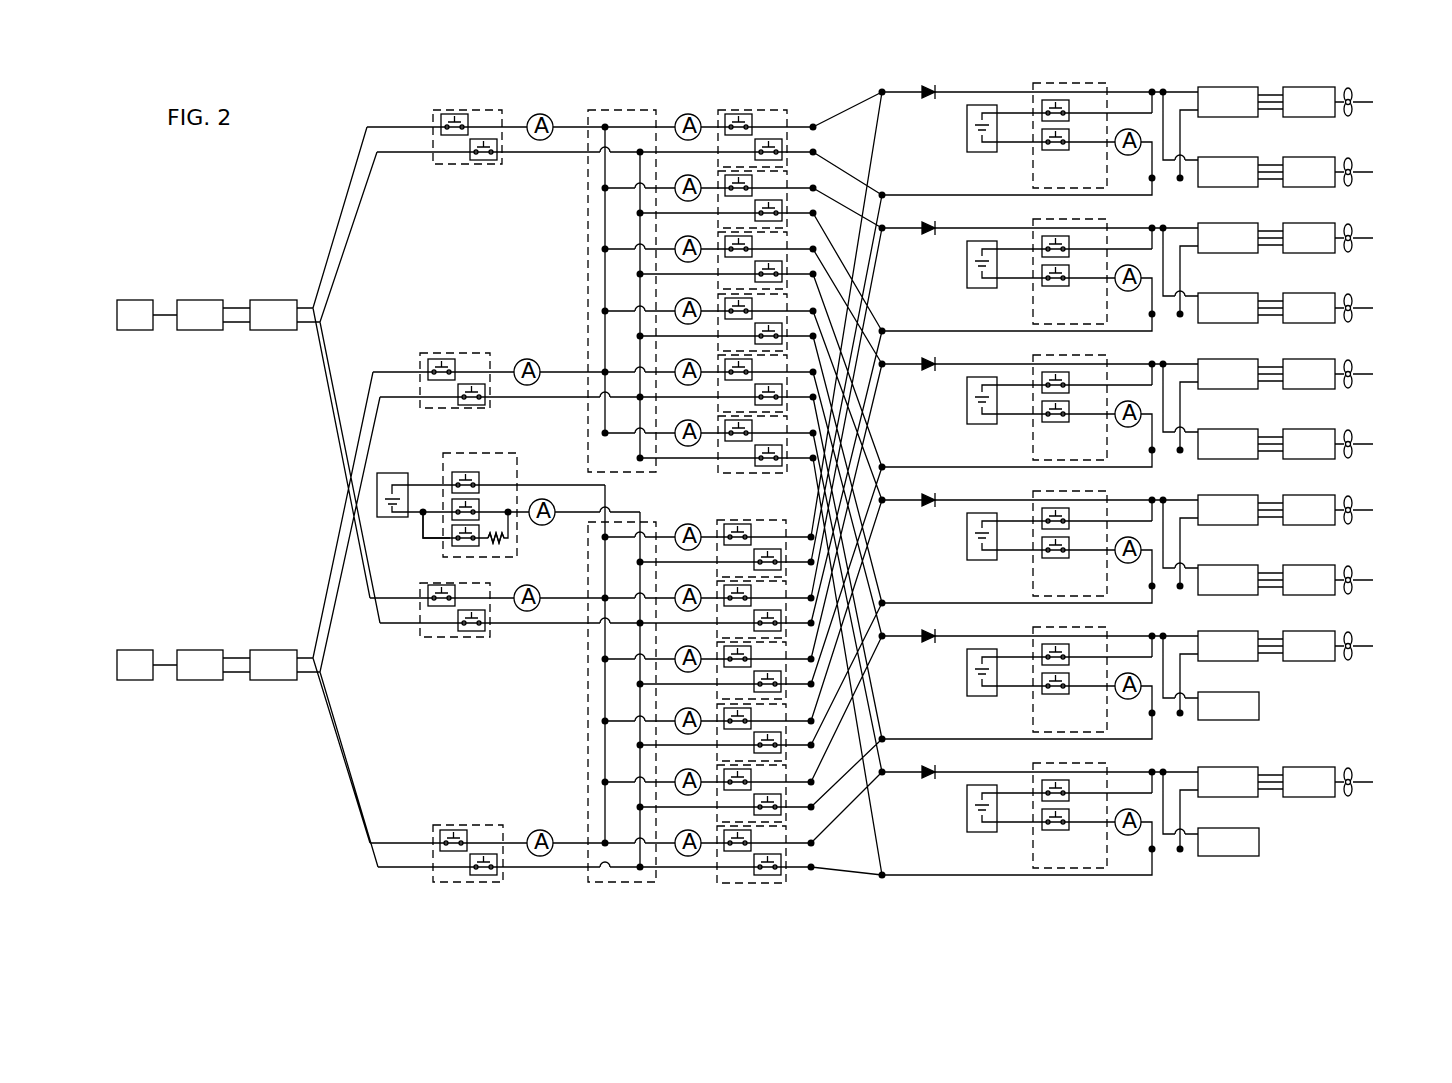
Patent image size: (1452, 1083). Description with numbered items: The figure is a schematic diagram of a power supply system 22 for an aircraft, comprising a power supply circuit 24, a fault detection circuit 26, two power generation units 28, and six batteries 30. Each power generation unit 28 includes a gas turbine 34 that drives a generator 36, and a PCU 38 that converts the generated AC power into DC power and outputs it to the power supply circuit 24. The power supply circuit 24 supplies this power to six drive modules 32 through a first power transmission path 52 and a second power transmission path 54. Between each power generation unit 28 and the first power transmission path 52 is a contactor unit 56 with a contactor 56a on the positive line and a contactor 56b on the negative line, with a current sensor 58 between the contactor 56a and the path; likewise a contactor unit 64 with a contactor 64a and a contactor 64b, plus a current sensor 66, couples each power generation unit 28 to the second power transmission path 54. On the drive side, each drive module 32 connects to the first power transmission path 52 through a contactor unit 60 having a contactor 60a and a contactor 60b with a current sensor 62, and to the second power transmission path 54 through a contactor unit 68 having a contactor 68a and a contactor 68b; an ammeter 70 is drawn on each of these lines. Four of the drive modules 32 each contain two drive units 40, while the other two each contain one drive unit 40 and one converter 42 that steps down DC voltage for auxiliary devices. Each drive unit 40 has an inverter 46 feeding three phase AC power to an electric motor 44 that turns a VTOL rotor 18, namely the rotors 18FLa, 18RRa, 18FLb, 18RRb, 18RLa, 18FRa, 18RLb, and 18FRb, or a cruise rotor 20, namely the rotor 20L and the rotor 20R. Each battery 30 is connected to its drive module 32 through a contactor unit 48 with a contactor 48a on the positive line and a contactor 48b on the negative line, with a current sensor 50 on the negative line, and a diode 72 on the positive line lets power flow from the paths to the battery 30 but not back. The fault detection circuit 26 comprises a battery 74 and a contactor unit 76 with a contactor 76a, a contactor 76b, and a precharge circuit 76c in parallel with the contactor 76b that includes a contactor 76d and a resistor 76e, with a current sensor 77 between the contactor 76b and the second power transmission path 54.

The power supply system 22 is at (260, 179).
The power supply circuit 24 is at (815, 96).
The fault detection circuit 26 is at (388, 458).
The power generation unit 28 is at (165, 281).
The battery 30 is at (967, 136).
The drive module 32 is at (1175, 78).
The gas turbine 34 is at (135, 331).
The generator 36 is at (193, 331).
The power control unit 38 is at (266, 331).
The drive unit 40 is at (1336, 87).
The converter 42 is at (1218, 721).
The electric motor 44 is at (1305, 157).
The inverter 46 is at (1236, 157).
The contactor unit 48 is at (1028, 182).
The contactor 48a is at (1048, 101).
The contactor 48b is at (1048, 153).
The current sensor 50 is at (1128, 155).
The first power transmission path 52 is at (602, 110).
The second power transmission path 54 is at (586, 742).
The contactor unit 56 is at (428, 111).
The contactor 56a is at (468, 122).
The contactor 56b is at (470, 158).
The current sensor 58 is at (545, 114).
The contactor unit 60 is at (792, 139).
The contactor 60a is at (737, 113).
The contactor 60b is at (769, 138).
The current sensor 62 is at (688, 114).
The contactor unit 64 is at (417, 645).
The contactor 64a is at (440, 601).
The contactor 64b is at (460, 632).
The current sensor 66 is at (529, 612).
The contactor unit 68 is at (714, 518).
The contactor 68a is at (736, 521).
The contactor 68b is at (766, 548).
The ammeter 70 is at (679, 527).
The diode 72 is at (928, 99).
The battery 74 is at (377, 492).
The contactor unit 76 is at (438, 452).
The contactor 76a is at (460, 470).
The contactor 76b is at (483, 498).
The precharge circuit 76c is at (467, 562).
The contactor 76d is at (450, 538).
The resistor 76e is at (506, 548).
The current sensor 77 is at (544, 499).
The VTOL rotor 18 is at (1391, 349).
The rotor 18FLa is at (1388, 110).
The rotor 18FLb is at (1388, 246).
The rotor 18FRa is at (1389, 452).
The rotor 18FRb is at (1390, 588).
The rotor 18RLa is at (1389, 382).
The rotor 18RLb is at (1390, 518).
The rotor 18RRa is at (1391, 180).
The rotor 18RRb is at (1391, 316).
The cruise rotor 20 is at (1377, 723).
The rotor 20L is at (1377, 655).
The rotor 20R is at (1377, 791).